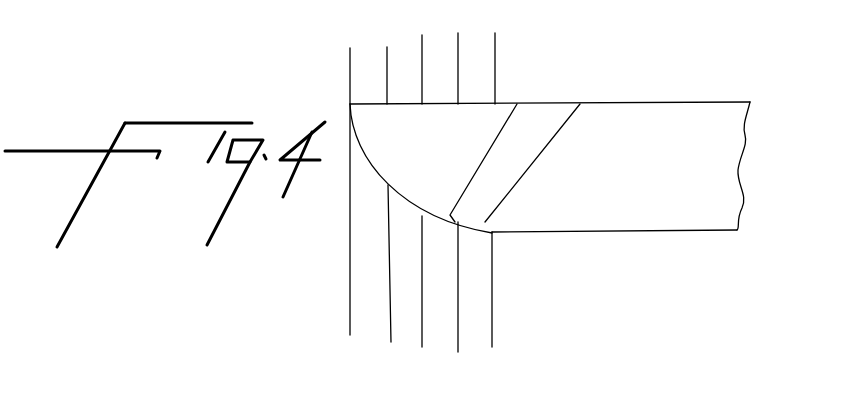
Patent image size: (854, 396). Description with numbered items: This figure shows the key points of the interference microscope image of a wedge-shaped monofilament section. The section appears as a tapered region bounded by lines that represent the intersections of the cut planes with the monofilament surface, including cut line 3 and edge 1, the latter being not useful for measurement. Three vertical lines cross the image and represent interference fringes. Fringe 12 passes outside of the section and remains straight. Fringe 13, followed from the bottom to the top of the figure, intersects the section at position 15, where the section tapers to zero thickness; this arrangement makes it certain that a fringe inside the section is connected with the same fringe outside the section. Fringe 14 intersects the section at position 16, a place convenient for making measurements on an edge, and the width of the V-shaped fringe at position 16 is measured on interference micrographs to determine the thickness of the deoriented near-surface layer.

The edge 1 is at (695, 102).
The cut line 3 is at (221, 9).
The interference fringe 12 is at (348, 80).
The interference fringe 13 is at (387, 62).
The interference fringe 14 is at (497, 55).
The position 15 is at (390, 185).
The position 16 is at (481, 223).